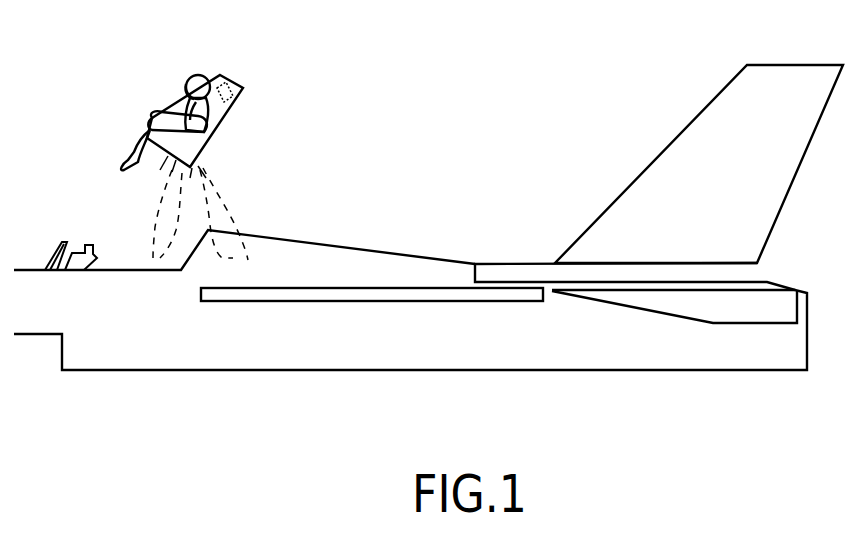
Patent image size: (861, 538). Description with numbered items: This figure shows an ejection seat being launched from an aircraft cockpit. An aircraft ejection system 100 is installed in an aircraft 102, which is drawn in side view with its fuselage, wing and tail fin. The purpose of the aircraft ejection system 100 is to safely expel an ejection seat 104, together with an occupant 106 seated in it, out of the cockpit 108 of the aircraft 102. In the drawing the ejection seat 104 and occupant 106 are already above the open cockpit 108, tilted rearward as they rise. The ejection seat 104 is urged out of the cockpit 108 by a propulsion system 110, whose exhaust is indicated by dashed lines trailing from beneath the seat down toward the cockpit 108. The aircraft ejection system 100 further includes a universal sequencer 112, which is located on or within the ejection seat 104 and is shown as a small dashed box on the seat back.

The aircraft ejection system 100 is at (327, 145).
The aircraft 102 is at (446, 342).
The ejection seat 104 is at (225, 119).
The occupant 106 is at (191, 83).
The cockpit 108 is at (113, 257).
The propulsion system 110 is at (163, 212).
The universal sequencer 112 is at (218, 83).